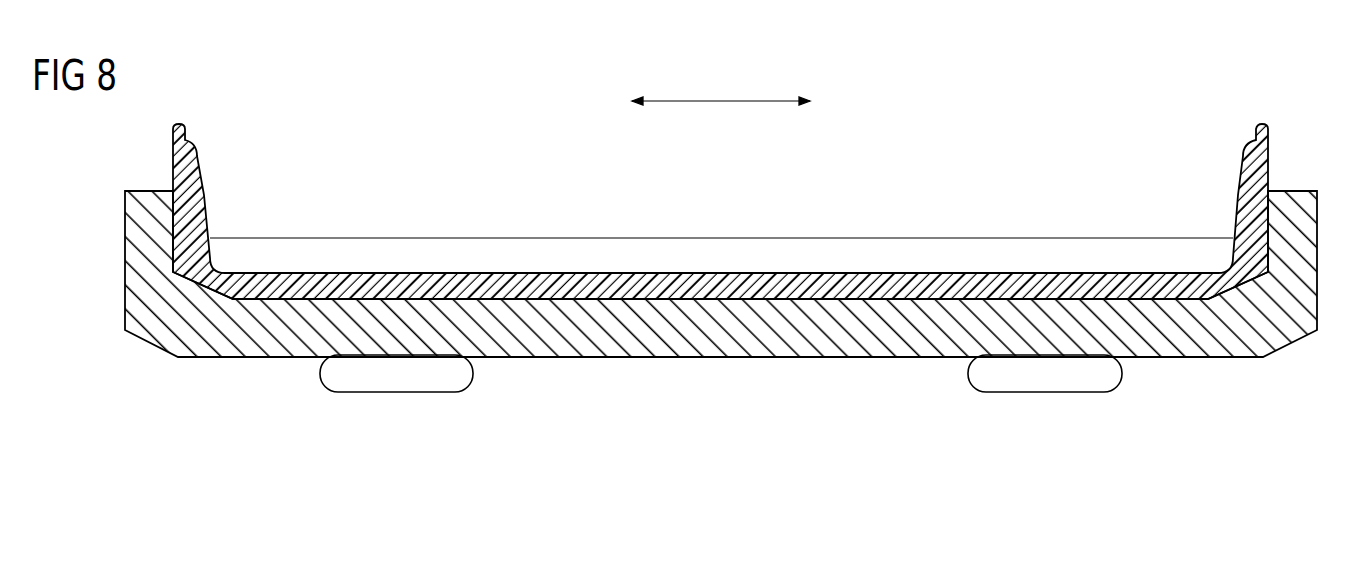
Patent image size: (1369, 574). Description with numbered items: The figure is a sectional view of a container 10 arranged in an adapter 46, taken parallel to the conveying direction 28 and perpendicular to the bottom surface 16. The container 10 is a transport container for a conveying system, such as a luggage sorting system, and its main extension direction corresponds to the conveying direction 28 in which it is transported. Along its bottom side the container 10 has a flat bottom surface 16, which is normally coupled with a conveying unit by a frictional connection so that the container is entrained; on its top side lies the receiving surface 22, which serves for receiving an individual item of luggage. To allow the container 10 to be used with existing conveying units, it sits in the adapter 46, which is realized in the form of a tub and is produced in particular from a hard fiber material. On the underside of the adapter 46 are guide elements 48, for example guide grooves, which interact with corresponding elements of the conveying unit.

The container 10 is at (746, 236).
The bottom surface 16 is at (700, 300).
The receiving surface 22 is at (862, 262).
The conveying direction 28 is at (719, 100).
The adapter 46 is at (1290, 248).
The guide elements 48 is at (397, 378).